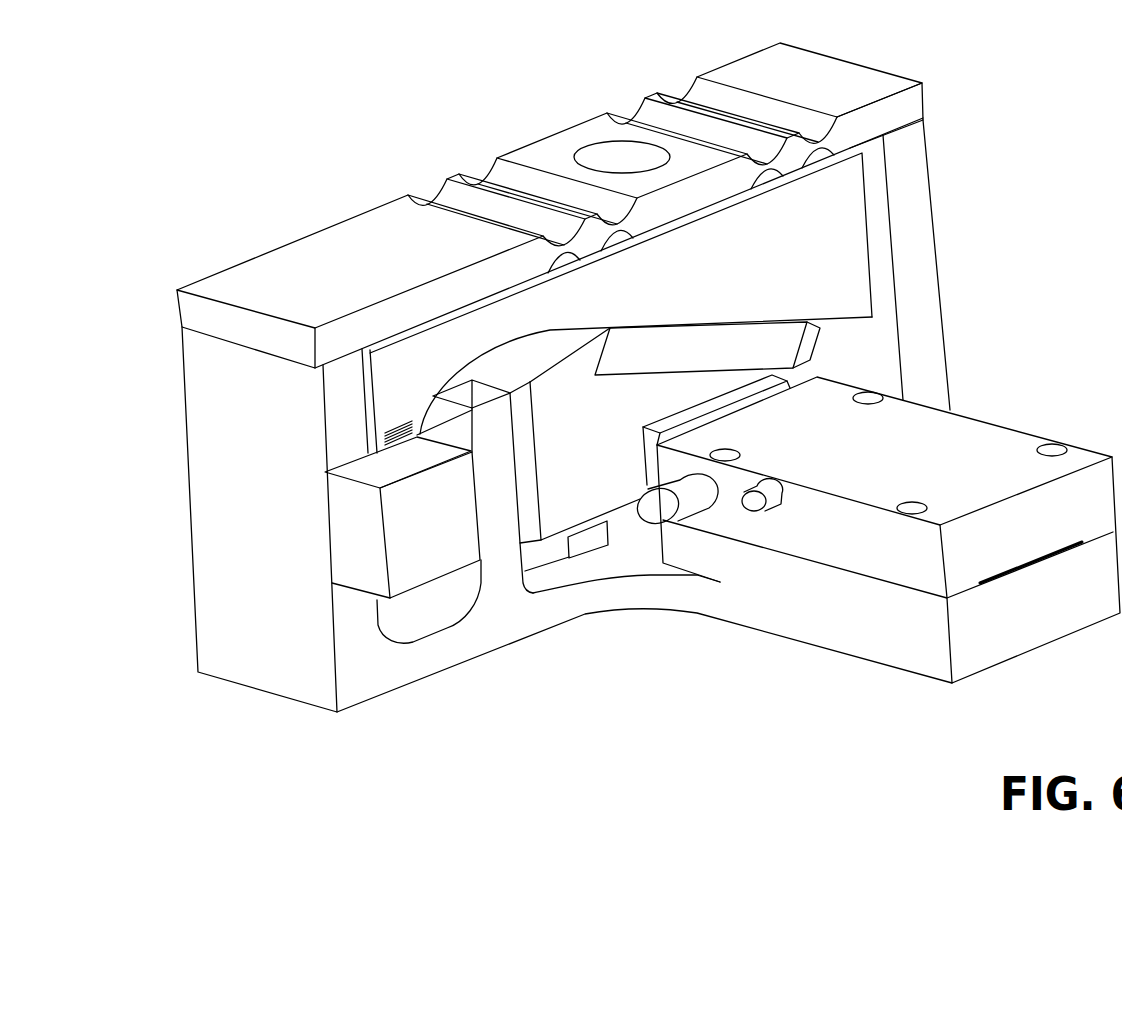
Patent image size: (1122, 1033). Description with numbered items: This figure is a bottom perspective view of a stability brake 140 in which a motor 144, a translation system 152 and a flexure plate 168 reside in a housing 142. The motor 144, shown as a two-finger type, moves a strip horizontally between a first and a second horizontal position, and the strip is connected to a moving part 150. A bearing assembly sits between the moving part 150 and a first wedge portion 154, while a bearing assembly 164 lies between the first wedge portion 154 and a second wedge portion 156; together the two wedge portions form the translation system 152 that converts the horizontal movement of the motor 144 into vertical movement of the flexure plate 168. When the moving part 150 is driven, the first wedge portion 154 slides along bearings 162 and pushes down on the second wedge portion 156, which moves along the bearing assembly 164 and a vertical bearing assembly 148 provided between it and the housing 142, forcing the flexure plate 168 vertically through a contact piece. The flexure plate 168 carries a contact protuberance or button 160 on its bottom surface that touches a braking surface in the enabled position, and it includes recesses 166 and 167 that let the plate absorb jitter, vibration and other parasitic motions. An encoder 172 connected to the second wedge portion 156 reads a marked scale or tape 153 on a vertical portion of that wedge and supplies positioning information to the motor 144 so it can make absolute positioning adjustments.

The stability brake 140 is at (1005, 106).
The housing 142 is at (277, 492).
The motor 144 is at (895, 471).
The vertical bearing assembly 148 is at (518, 513).
The moving part 150 is at (731, 410).
The translation system 152 is at (884, 242).
The scale or tape 153 is at (396, 422).
The first wedge portion 154 is at (613, 463).
The second wedge portion 156 is at (822, 253).
The contact protuberance or button 160 is at (577, 152).
The bearings 162 is at (650, 538).
The bearing assembly 164 is at (727, 361).
The recess 166 is at (450, 199).
The recess 167 is at (626, 243).
The flexure plate 168 is at (226, 268).
The encoder 172 is at (443, 538).